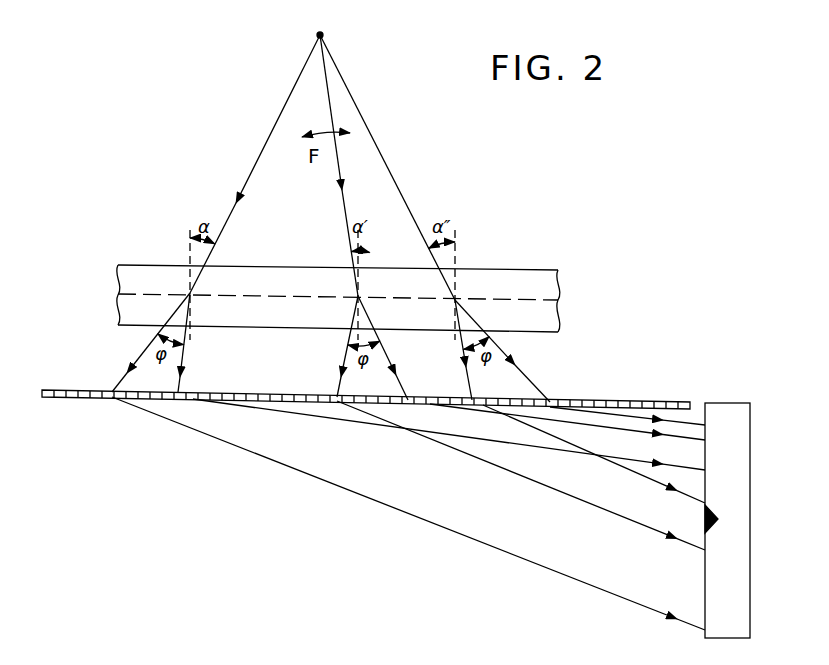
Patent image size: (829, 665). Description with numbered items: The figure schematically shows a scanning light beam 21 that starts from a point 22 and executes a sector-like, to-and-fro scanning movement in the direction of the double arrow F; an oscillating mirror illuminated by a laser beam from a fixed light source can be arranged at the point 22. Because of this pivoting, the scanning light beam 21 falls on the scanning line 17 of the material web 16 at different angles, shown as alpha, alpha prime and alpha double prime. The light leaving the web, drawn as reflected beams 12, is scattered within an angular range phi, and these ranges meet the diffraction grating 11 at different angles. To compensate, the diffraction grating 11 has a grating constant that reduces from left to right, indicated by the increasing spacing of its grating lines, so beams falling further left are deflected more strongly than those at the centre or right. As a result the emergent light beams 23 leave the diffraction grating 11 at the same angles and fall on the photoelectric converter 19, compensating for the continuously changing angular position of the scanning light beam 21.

The point 22 is at (324, 36).
The scanning light beam 21 is at (263, 145).
The material web 16 is at (527, 285).
The scanning line 17 is at (272, 297).
The reflected beams 12 is at (137, 360).
The diffraction grating 11 is at (297, 394).
The emergent light beams 23 is at (350, 494).
The photoelectric converter 19 is at (724, 408).